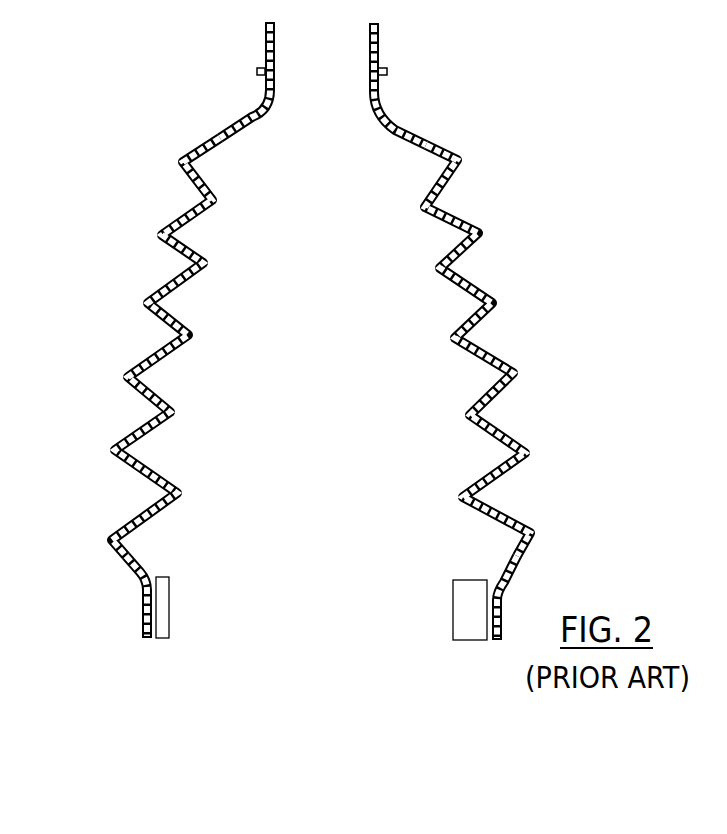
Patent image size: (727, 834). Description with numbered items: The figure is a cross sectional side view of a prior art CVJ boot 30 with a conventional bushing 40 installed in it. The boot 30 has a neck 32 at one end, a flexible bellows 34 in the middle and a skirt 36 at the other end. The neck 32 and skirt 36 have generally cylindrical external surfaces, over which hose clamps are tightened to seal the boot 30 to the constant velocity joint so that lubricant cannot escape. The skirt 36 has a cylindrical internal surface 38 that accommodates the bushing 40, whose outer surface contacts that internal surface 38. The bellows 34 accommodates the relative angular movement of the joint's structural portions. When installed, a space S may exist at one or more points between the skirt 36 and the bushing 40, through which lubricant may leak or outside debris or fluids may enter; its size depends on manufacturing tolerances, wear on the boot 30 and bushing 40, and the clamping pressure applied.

The CVJ boot 30 is at (327, 331).
The neck 32 is at (379, 58).
The bellows 34 is at (500, 355).
The skirt 36 is at (132, 606).
The internal surface 38 is at (503, 594).
The bushing 40 is at (462, 612).
The space S is at (155, 641).